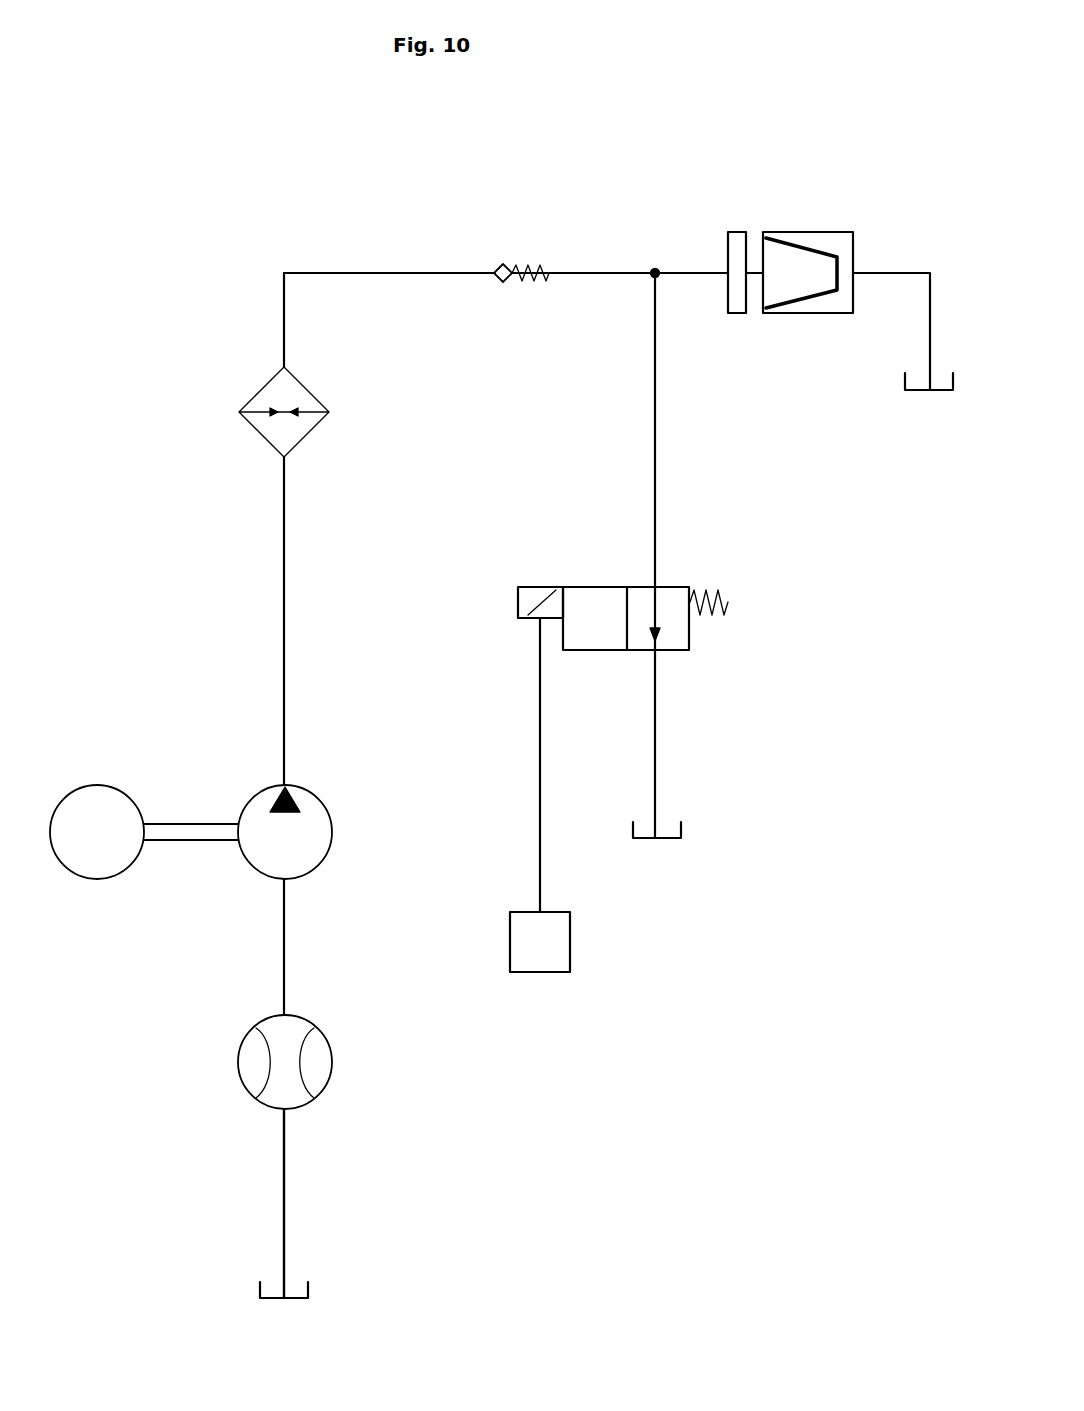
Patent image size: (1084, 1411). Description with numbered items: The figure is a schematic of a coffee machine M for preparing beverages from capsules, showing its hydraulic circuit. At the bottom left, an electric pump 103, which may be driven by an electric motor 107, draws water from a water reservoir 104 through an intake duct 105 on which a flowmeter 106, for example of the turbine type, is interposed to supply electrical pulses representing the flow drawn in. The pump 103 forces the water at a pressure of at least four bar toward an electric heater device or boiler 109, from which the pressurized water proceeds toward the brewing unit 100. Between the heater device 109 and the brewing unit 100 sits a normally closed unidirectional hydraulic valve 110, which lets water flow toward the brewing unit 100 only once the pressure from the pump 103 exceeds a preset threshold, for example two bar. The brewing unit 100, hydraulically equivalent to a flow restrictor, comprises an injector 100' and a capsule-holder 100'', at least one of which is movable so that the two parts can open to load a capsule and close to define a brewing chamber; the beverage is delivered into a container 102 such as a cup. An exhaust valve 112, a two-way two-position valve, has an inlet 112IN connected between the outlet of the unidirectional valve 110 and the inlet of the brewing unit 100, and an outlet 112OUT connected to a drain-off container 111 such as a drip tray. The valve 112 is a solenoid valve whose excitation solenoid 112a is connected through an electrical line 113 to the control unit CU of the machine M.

The machine M is at (170, 302).
The brewing unit 100 is at (793, 258).
The injector 100' is at (718, 313).
The capsule-holder 100'' is at (835, 242).
The container 102 is at (910, 392).
The electric pump 103 is at (296, 855).
The water reservoir 104 is at (288, 1298).
The intake duct 105 is at (287, 1244).
The flowmeter 106 is at (310, 1061).
The electric motor 107 is at (105, 855).
The heater device 109 is at (258, 422).
The unidirectional hydraulic valve 110 is at (520, 258).
The drain-off container 111 is at (660, 840).
The exhaust valve 112 is at (597, 545).
The excitation solenoid 112a is at (510, 612).
The inlet 112IN is at (655, 583).
The outlet 112OUT is at (657, 655).
The electrical line 113 is at (533, 718).
The control unit CU is at (548, 962).